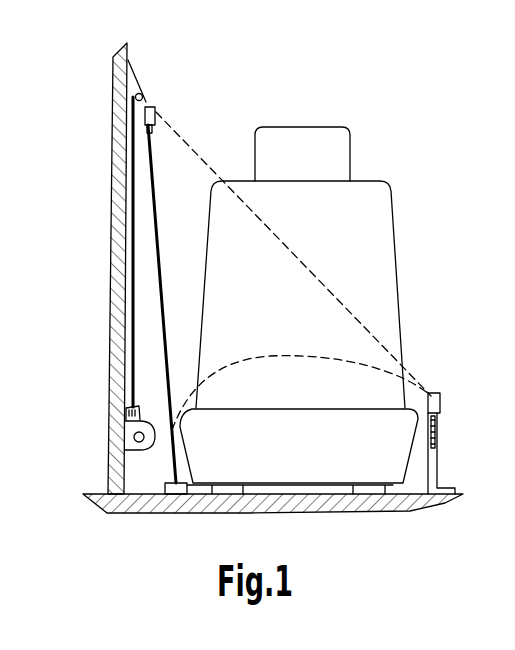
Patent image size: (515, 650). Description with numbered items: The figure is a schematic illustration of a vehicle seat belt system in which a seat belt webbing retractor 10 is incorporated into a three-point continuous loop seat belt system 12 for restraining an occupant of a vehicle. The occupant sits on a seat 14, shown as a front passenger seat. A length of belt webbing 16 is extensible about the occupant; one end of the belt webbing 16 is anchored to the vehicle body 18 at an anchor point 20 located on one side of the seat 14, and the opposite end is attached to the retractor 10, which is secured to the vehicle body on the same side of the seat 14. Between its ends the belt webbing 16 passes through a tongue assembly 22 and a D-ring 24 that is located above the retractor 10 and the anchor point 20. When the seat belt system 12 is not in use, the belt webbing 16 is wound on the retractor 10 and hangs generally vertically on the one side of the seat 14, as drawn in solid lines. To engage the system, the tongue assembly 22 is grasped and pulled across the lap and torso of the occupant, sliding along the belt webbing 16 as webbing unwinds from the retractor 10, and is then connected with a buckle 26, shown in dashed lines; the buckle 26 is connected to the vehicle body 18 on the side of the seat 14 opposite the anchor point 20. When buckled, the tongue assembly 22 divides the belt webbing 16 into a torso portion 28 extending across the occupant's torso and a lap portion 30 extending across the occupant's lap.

The seat belt webbing retractor 10 is at (122, 438).
The three-point continuous loop seat belt system 12 is at (323, 283).
The seat 14 is at (372, 192).
The belt webbing 16 is at (158, 273).
The vehicle body 18 is at (105, 510).
The anchor point 20 is at (184, 481).
The tongue assembly 22 is at (156, 110).
The D-ring 24 is at (133, 82).
The buckle 26 is at (440, 445).
The torso portion 28 is at (338, 292).
The lap portion 30 is at (318, 355).